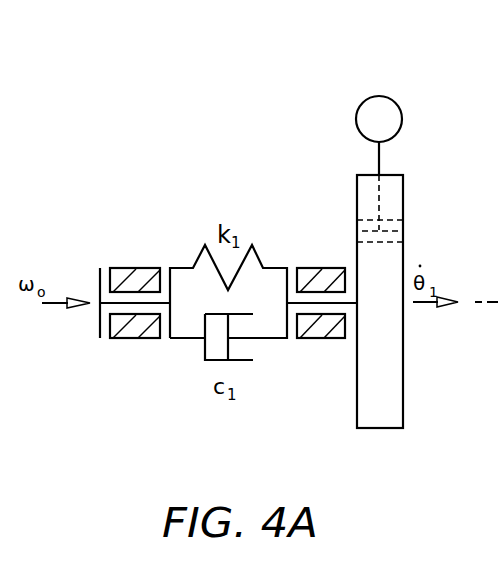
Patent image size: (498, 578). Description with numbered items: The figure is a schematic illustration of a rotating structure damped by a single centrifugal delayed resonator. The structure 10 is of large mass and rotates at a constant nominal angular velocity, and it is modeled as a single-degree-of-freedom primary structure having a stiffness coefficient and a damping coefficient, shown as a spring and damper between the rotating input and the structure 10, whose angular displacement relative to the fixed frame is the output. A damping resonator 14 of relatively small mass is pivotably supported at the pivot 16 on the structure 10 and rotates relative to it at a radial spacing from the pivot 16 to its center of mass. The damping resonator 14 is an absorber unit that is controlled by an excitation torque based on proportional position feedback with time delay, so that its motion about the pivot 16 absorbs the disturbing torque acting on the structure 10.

The structure 10 is at (403, 383).
The damping resonator 14 is at (397, 107).
The pivot 16 is at (403, 229).